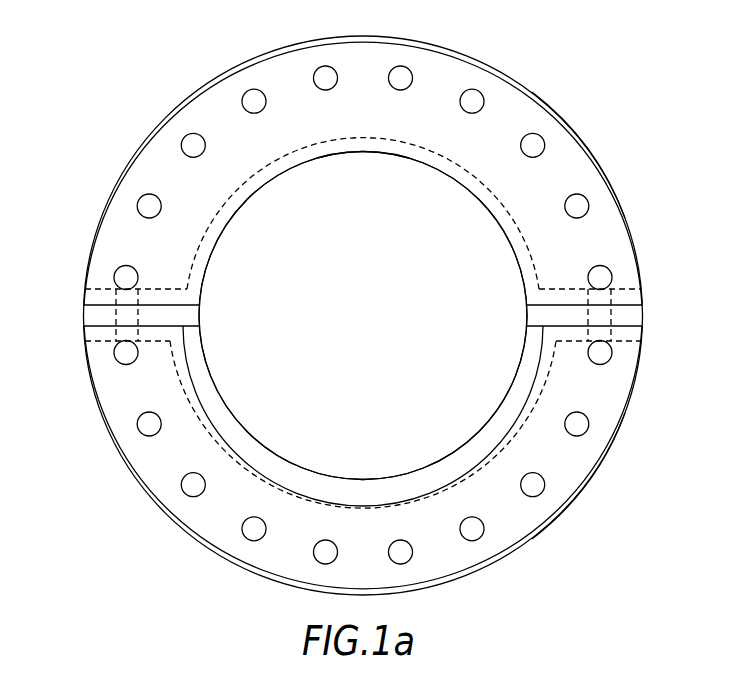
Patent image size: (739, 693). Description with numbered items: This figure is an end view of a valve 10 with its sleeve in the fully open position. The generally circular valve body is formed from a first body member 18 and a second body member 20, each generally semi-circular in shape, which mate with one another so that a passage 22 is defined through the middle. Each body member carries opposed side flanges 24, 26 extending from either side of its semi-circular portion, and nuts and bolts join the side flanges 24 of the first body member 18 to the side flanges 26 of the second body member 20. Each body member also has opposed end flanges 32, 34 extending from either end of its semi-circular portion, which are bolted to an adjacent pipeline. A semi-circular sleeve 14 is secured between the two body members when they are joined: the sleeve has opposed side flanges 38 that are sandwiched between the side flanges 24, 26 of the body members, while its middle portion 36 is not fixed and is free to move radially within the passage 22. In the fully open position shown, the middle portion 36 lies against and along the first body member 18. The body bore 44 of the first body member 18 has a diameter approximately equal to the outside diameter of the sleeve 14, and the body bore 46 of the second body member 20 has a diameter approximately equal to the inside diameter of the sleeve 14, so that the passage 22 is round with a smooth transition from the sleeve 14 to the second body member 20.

The valve 10 is at (126, 106).
The semi-circular sleeve 14 is at (278, 436).
The first body member 18 is at (112, 464).
The second body member 20 is at (110, 161).
The passage 22 is at (340, 233).
The side flanges of first body member 24 is at (80, 335).
The side flanges of second body member 26 is at (87, 296).
The end flanges of first body member 32 is at (520, 541).
The end flanges of second body member 34 is at (592, 168).
The middle portion of sleeve 36 is at (390, 487).
The side flanges of sleeve 38 is at (88, 315).
The body bore of first body member 44 is at (468, 462).
The body bore of second body member 46 is at (476, 198).